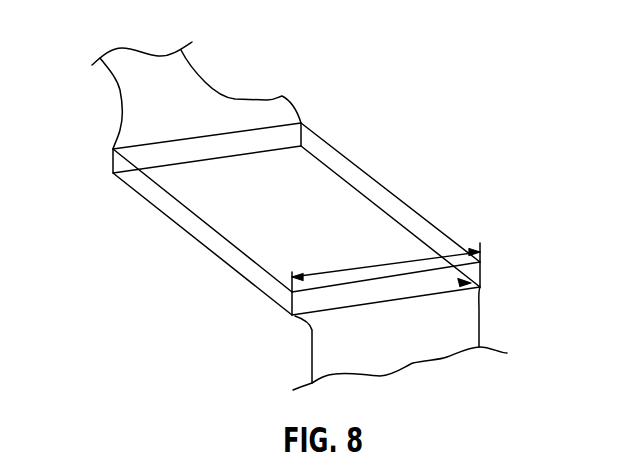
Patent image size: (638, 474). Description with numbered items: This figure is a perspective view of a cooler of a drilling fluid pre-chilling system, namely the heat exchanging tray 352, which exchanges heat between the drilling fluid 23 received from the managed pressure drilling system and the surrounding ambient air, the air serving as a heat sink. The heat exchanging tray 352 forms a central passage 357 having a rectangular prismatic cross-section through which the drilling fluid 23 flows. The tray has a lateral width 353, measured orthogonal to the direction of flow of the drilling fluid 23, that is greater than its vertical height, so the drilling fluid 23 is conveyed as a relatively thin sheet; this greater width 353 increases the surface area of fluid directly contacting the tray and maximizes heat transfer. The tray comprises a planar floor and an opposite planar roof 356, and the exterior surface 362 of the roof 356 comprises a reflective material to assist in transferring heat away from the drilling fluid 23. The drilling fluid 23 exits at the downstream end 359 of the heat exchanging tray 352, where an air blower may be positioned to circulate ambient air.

The drilling fluid 23 is at (277, 108).
The heat exchanging tray 352 is at (305, 236).
The lateral width 353 is at (427, 245).
The planar roof 356 is at (380, 197).
The central passage 357 is at (481, 265).
The downstream end 359 is at (300, 318).
The exterior surface 362 is at (315, 172).